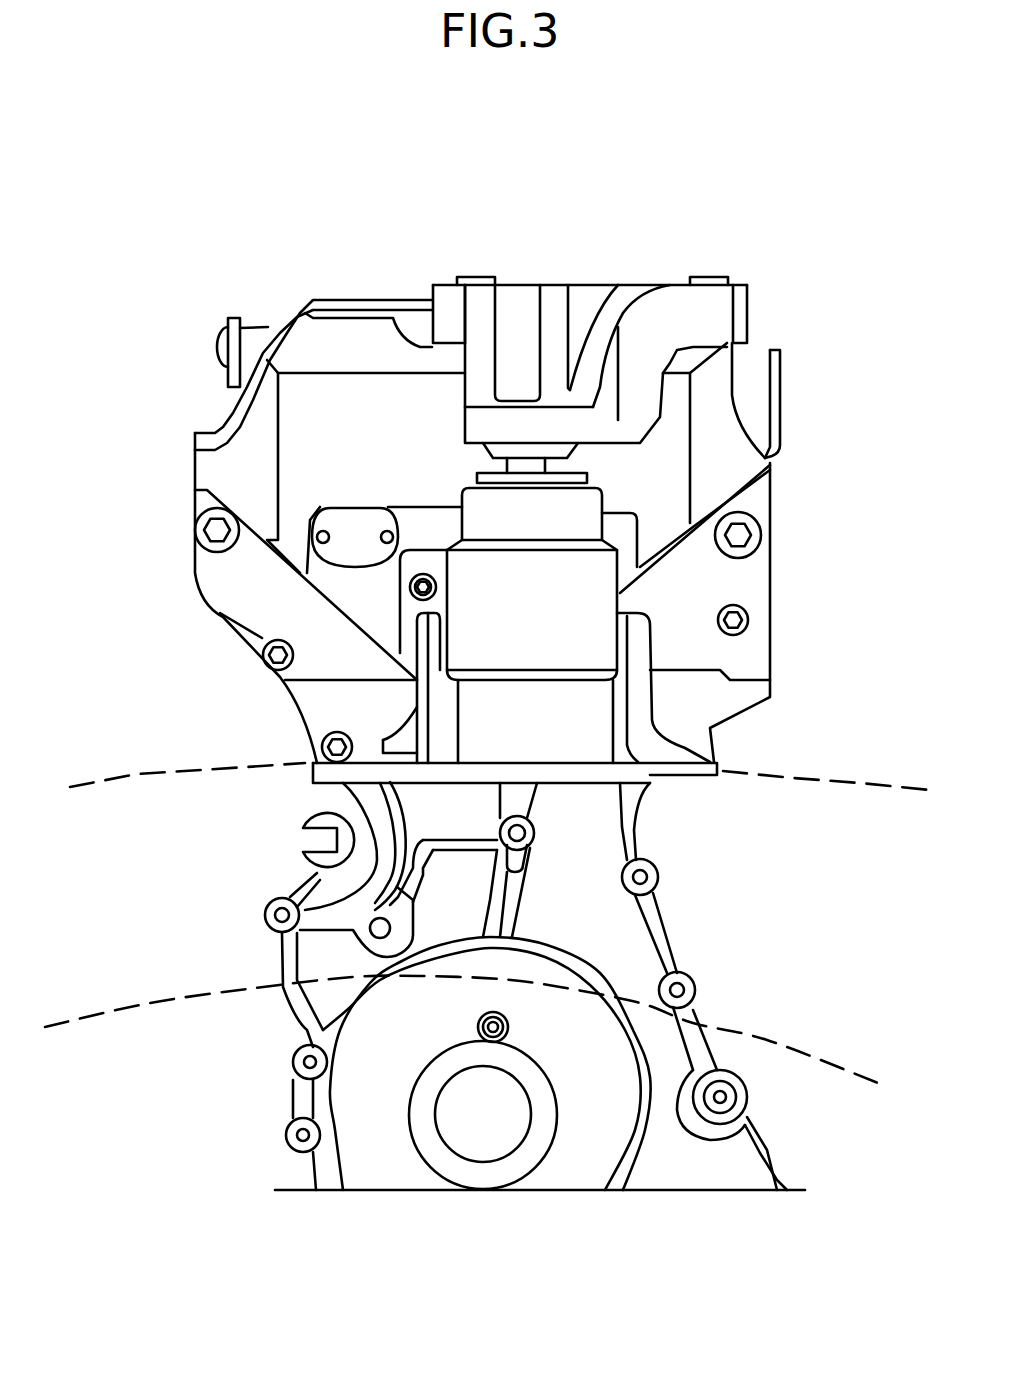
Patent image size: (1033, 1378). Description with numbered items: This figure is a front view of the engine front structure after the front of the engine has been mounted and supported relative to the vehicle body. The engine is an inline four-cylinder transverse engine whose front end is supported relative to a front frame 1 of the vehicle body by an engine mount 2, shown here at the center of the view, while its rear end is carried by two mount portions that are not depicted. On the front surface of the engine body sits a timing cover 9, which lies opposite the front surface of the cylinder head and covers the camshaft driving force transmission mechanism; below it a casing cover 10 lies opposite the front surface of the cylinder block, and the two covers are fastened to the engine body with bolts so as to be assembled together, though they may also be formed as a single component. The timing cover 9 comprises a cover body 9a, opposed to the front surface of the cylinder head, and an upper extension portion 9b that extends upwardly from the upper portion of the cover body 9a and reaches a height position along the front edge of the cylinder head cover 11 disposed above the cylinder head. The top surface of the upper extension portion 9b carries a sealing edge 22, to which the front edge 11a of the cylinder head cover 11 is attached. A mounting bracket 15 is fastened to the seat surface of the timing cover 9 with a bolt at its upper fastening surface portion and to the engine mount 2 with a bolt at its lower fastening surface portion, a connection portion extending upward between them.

The front frame 1 is at (132, 773).
The engine mount 2 is at (467, 593).
The timing cover 9 is at (546, 563).
The cover body 9a is at (757, 657).
The upper extension portion 9b is at (732, 442).
The casing cover 10 is at (657, 925).
The cylinder head cover 11 is at (313, 332).
The front edge 11a is at (314, 300).
The mounting bracket 15 is at (558, 297).
The sealing edge 22 is at (410, 300).